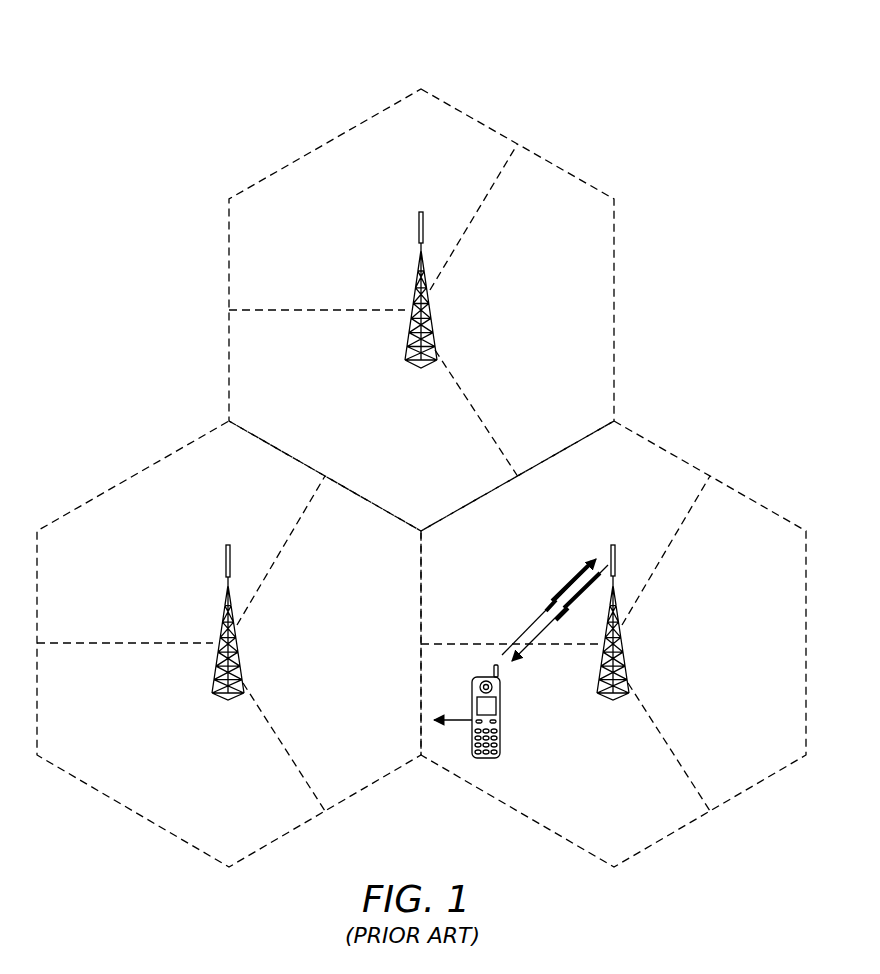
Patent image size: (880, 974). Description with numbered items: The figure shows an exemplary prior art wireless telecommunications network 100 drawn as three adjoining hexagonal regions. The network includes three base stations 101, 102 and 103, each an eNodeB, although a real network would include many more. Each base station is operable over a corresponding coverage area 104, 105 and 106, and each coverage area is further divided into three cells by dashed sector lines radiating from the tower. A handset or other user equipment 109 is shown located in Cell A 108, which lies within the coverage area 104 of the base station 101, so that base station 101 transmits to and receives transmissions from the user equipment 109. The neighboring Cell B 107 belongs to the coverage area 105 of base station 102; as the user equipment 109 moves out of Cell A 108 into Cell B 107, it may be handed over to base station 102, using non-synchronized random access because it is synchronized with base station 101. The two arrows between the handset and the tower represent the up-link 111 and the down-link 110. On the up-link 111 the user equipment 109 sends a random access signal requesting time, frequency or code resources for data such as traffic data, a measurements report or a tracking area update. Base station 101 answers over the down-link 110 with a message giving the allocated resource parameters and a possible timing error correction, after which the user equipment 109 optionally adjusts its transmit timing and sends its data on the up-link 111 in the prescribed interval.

The wireless telecommunications network 100 is at (217, 69).
The base station 101 is at (627, 655).
The base station 102 is at (227, 602).
The base station 103 is at (418, 270).
The coverage area 104 is at (740, 793).
The coverage area 105 is at (127, 808).
The coverage area 106 is at (614, 305).
The Cell B 107 is at (375, 753).
The Cell A 108 is at (620, 820).
The user equipment 109 is at (501, 727).
The down-link 110 is at (545, 633).
The up-link 111 is at (565, 590).